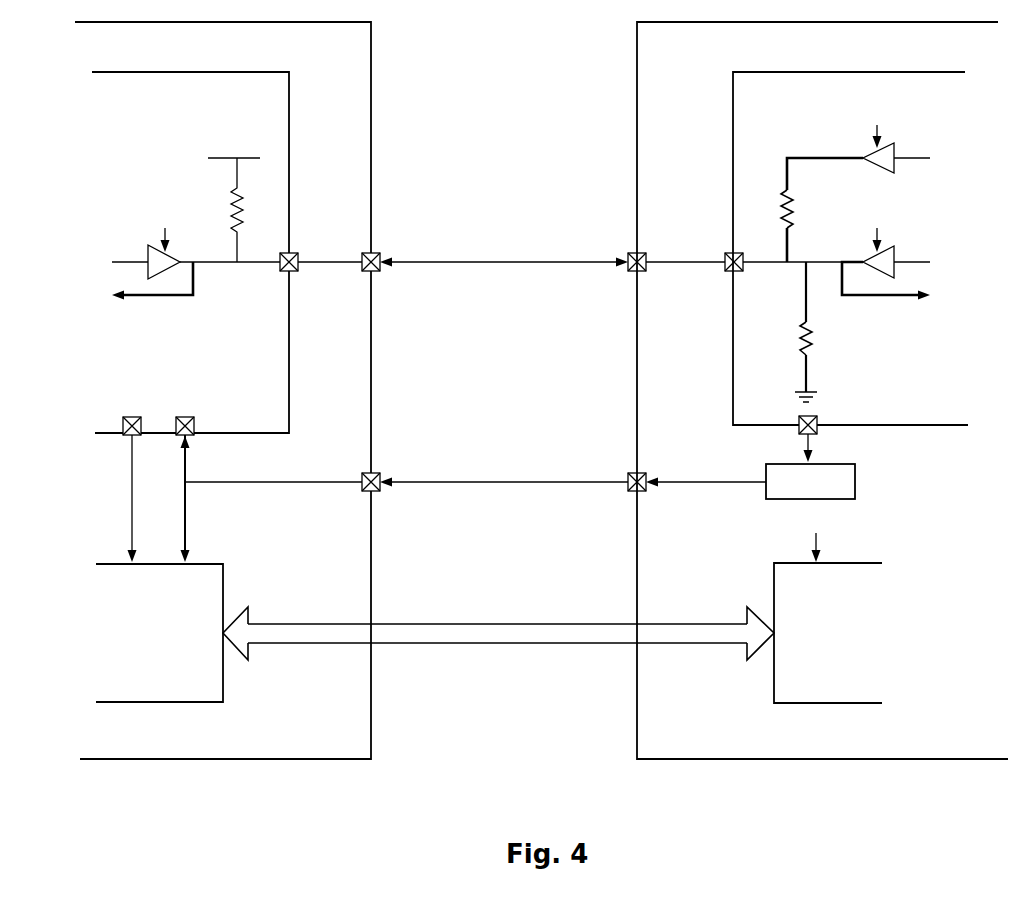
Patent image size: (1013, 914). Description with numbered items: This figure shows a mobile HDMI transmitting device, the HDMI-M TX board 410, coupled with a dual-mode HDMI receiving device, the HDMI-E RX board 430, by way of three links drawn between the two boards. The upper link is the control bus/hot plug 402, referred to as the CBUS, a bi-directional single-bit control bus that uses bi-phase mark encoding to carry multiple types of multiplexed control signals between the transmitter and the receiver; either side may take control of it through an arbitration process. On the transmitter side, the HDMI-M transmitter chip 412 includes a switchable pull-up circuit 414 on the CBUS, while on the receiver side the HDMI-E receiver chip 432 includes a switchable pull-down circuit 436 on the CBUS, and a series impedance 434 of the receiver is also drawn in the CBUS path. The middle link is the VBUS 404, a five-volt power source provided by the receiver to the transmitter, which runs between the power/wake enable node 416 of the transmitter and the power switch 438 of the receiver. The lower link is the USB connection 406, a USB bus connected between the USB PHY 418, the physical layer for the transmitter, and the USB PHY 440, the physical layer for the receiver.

The control bus/hot plug 402 is at (511, 273).
The VBUS 404 is at (564, 492).
The USB connection 406 is at (498, 644).
The HDMI-M TX board 410 is at (355, 61).
The HDMI-M transmitter chip 412 is at (272, 112).
The switchable pull-up circuit 414 is at (184, 221).
The power/wake enable node 416 is at (242, 470).
The USB PHY 418 is at (208, 598).
The HDMI-E RX board 430 is at (689, 61).
The HDMI-E receiver chip 432 is at (785, 130).
The series impedance 434 is at (862, 193).
The switchable pull-down circuit 436 is at (854, 315).
The power switch 438 is at (912, 484).
The USB PHY 440 is at (830, 603).